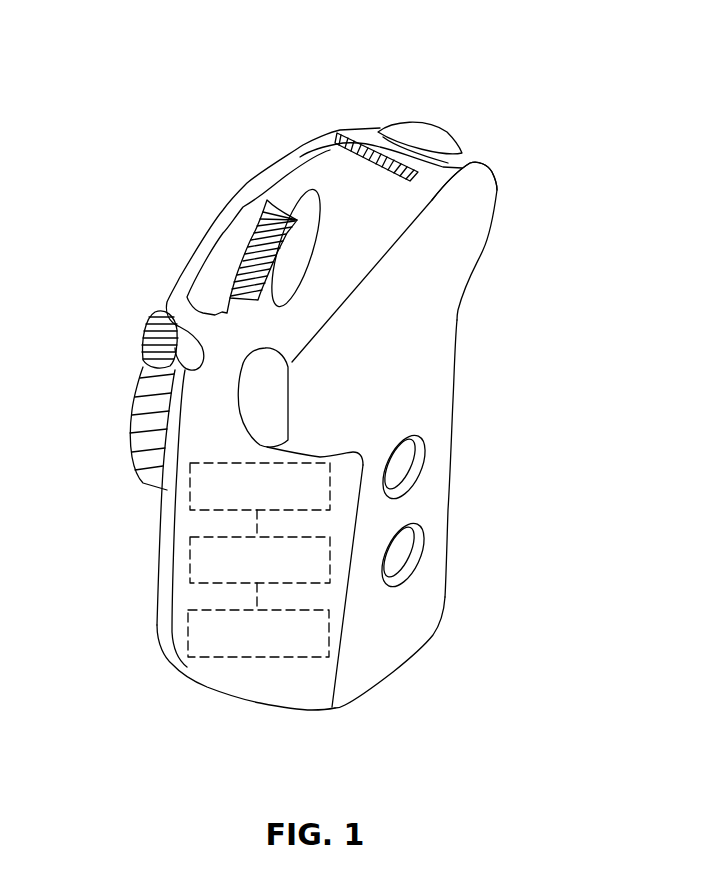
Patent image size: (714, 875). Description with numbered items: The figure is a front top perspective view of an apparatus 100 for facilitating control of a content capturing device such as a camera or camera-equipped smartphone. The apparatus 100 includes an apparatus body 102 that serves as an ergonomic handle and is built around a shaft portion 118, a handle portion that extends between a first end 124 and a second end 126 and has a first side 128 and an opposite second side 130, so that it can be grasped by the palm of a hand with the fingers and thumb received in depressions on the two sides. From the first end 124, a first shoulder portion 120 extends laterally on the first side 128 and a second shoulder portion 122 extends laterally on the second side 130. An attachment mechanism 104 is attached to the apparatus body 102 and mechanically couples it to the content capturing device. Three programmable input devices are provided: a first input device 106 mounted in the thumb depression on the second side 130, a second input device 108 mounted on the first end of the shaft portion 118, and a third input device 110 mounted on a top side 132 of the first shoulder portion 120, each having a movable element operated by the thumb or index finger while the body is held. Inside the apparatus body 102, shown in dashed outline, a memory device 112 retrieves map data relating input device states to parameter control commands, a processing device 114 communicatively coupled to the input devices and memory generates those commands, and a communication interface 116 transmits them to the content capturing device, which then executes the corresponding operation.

The apparatus 100 is at (323, 55).
The apparatus body 102 is at (477, 360).
The attachment mechanism 104 is at (157, 413).
The first input device 106 is at (250, 230).
The second input device 108 is at (345, 132).
The third input device 110 is at (438, 118).
The memory device 112 is at (190, 482).
The processing device 114 is at (193, 550).
The communication interface 116 is at (210, 630).
The shaft portion 118 is at (443, 483).
The first shoulder portion 120 is at (470, 197).
The second shoulder portion 122 is at (253, 393).
The first end 124 is at (273, 168).
The second end 126 is at (405, 663).
The first side 128 is at (455, 428).
The second side 130 is at (346, 606).
The top side 132 is at (463, 170).